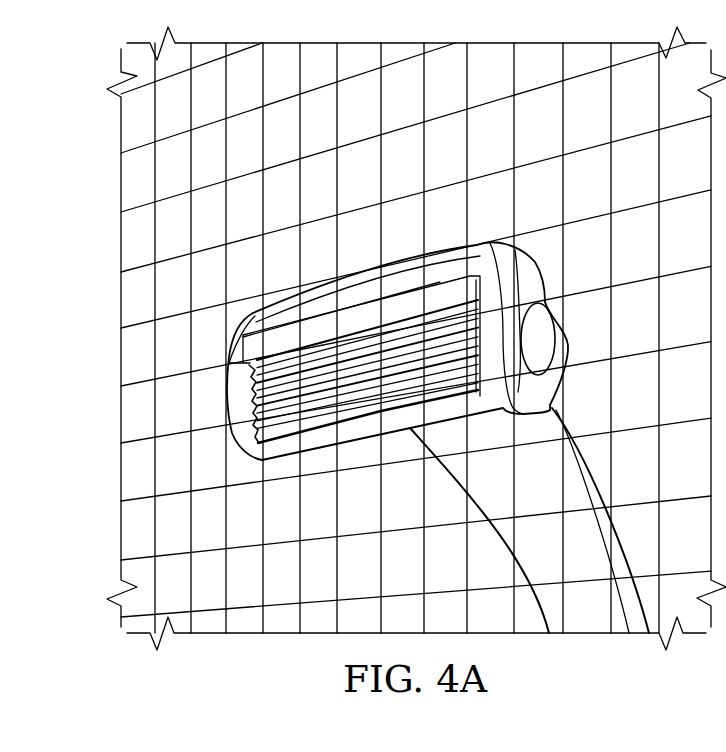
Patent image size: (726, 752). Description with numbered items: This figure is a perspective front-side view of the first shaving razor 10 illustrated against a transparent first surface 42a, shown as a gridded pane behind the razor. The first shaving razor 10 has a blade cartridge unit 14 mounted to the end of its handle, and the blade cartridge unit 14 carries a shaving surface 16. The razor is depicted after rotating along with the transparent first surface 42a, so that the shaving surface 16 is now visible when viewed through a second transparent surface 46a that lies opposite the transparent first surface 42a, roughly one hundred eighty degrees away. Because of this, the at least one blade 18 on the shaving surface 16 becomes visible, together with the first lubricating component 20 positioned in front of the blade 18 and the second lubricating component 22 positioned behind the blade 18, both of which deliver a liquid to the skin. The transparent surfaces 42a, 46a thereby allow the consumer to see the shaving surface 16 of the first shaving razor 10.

The first shaving razor 10 is at (403, 415).
The blade cartridge unit 14 is at (291, 296).
The shaving surface 16 is at (234, 391).
The blade 18 is at (477, 338).
The first lubricating component 20 is at (276, 423).
The second lubricating component 22 is at (432, 298).
The transparent first surface 42a is at (416, 338).
The second transparent surface 46a is at (437, 101).